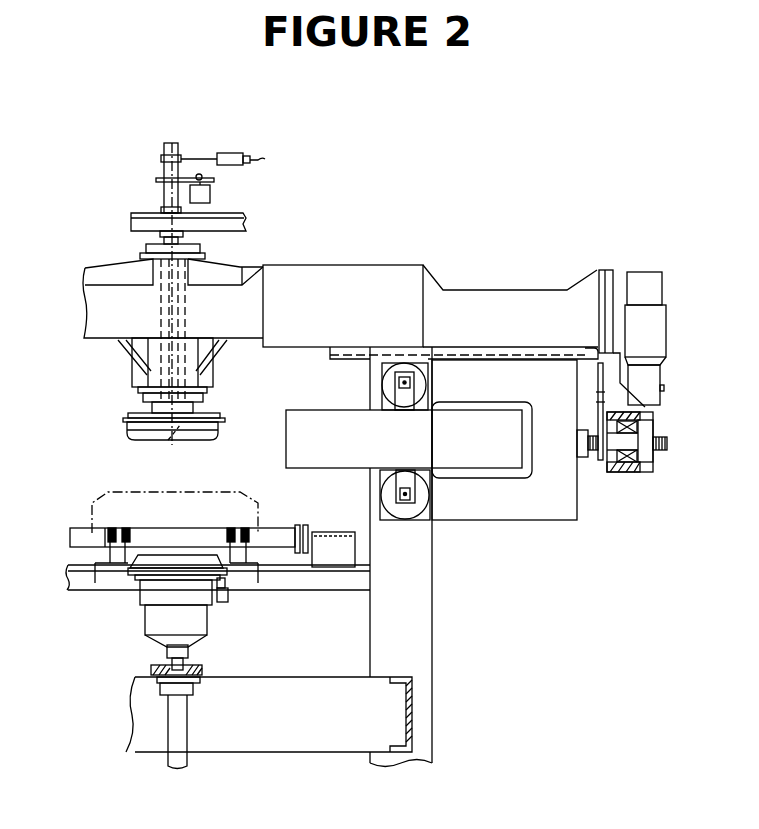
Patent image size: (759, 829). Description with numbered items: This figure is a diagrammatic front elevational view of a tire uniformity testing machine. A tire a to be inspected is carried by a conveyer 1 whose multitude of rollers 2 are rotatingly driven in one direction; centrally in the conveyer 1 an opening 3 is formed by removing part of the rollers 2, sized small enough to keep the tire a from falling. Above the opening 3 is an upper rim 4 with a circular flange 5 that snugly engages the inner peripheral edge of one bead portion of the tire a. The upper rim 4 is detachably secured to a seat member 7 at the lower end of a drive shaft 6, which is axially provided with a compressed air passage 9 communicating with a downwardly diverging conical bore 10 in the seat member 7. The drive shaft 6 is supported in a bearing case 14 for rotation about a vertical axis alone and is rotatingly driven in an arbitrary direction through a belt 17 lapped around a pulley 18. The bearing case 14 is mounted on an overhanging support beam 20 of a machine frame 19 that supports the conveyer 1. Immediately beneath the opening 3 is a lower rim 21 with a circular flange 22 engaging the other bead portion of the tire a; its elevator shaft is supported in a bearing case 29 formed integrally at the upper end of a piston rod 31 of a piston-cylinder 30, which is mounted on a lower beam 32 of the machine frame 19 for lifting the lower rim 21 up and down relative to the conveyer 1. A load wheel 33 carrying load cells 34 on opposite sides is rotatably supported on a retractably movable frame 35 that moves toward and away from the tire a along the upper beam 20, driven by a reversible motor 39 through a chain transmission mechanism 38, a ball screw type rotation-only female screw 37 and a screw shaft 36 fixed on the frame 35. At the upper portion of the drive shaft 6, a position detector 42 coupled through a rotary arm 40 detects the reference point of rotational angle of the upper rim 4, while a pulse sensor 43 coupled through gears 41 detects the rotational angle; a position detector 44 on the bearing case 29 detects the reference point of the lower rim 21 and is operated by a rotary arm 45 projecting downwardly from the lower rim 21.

The conveyer 1 is at (63, 536).
The rollers 2 is at (82, 535).
The opening 3 is at (148, 548).
The upper rim 4 is at (195, 440).
The circular flange 5 is at (225, 421).
The drive shaft 6 is at (184, 302).
The seat member 7 is at (214, 410).
The compressed air passage 9 is at (168, 320).
The conical bore 10 is at (178, 433).
The bearing case 14 is at (135, 383).
The belt 17 is at (237, 220).
The pulley 18 is at (143, 212).
The machine frame 19 is at (434, 596).
The overhanging support beam 20 is at (345, 267).
The lower rim 21 is at (182, 570).
The circular flange 22 is at (127, 575).
The bearing case 29 is at (147, 597).
The piston-cylinder 30 is at (172, 715).
The piston rod 31 is at (170, 670).
The lower beam 32 is at (318, 690).
The load wheel 33 is at (305, 410).
The load cells 34 is at (385, 387).
The retractably movable frame 35 is at (538, 500).
The screw shaft 36 is at (593, 452).
The female screw 37 is at (622, 442).
The chain transmission mechanism 38 is at (597, 416).
The reversible motor 39 is at (645, 272).
The rotary arm 40 is at (193, 157).
The gears 41 is at (184, 178).
The position detector 42 is at (232, 153).
The pulse sensor 43 is at (210, 195).
The position detector 44 is at (222, 602).
The rotary arm 45 is at (225, 587).
The tire a is at (120, 510).